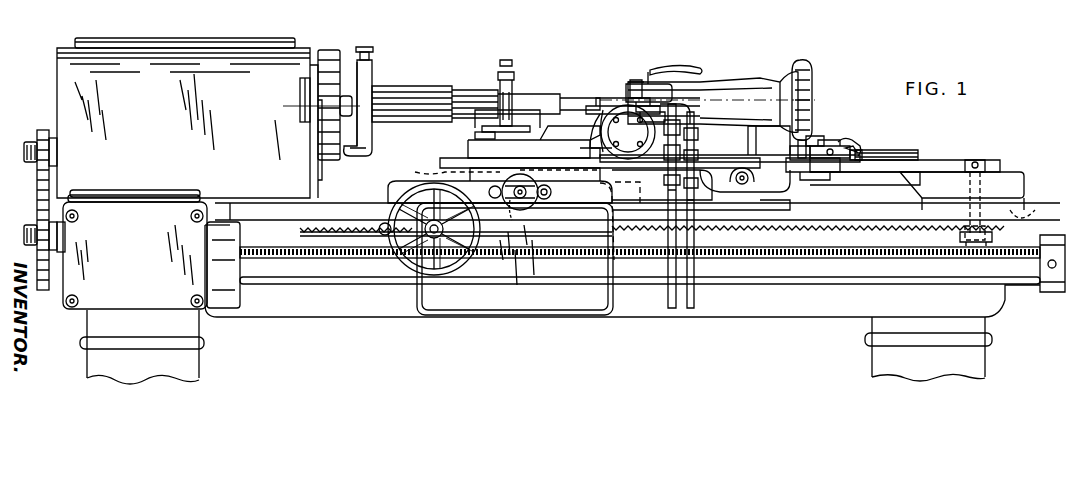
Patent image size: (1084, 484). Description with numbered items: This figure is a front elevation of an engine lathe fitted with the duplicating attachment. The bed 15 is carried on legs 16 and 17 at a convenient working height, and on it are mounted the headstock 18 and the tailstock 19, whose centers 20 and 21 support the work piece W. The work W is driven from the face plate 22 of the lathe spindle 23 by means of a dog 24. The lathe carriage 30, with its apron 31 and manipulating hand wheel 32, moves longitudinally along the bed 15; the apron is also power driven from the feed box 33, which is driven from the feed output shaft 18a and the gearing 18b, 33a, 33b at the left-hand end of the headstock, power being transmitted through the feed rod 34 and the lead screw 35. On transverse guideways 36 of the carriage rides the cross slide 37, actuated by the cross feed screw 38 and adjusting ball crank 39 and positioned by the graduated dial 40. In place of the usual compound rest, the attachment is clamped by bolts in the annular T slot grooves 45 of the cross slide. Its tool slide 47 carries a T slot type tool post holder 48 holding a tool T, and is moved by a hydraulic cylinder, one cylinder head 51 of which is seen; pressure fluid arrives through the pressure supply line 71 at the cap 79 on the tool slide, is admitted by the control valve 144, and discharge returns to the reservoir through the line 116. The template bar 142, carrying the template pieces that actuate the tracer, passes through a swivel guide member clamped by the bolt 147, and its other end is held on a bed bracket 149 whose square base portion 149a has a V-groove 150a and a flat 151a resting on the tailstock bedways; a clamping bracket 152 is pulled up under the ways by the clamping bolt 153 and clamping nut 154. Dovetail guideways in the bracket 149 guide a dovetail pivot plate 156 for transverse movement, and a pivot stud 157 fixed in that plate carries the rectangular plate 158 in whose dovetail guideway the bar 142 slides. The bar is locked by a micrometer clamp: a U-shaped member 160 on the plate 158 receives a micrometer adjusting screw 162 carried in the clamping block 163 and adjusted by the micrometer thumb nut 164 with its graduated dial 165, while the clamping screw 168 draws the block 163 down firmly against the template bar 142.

The bed 15 is at (374, 304).
The leg 16 is at (190, 370).
The leg 17 is at (880, 361).
The headstock 18 is at (60, 64).
The feed output shaft 18a is at (26, 150).
The gearing 18b is at (43, 130).
The tailstock 19 is at (748, 92).
The center 20 is at (346, 116).
The center 21 is at (608, 98).
The face plate 22 is at (330, 50).
The lathe spindle 23 is at (308, 114).
The dog 24 is at (373, 68).
The lathe carriage 30 is at (392, 184).
The apron 31 is at (545, 315).
The manipulating hand wheel 32 is at (470, 252).
The feed box 33 is at (135, 252).
The gearing 33a is at (66, 236).
The gearing 33b is at (38, 194).
The feed rod 34 is at (888, 282).
The lead screw 35 is at (950, 246).
The guideways 36 is at (553, 192).
The cross slide 37 is at (576, 175).
The cross feed screw 38 is at (520, 208).
The adjusting ball crank 39 is at (548, 200).
The graduated dial 40 is at (528, 214).
The annular T slot grooves 45 is at (583, 163).
The tool slide 47 is at (590, 128).
The T slot type tool post holder 48 is at (475, 135).
The cylinder head 51 is at (614, 138).
The pressure supply line 71 is at (694, 297).
The cap 79 is at (630, 88).
The line 116 is at (668, 297).
The template bar 142 is at (906, 150).
The control valve 144 is at (672, 96).
The bolt 147 is at (628, 222).
The bed bracket 149 is at (896, 168).
The square base portion 149a is at (1008, 172).
The rack 150a is at (905, 230).
The bracket 151a is at (1038, 206).
The clamping bracket 152 is at (992, 234).
The clamping bolt 153 is at (972, 162).
The clamping nut 154 is at (980, 162).
The dovetail pivot plate 156 is at (816, 166).
The pivot stud 157 is at (836, 166).
The rectangular plate 158 is at (776, 152).
The U-shaped member 160 is at (862, 150).
The micrometer adjusting screw 162 is at (862, 140).
The clamping block 163 is at (836, 142).
The micrometer thumb nut 164 is at (796, 96).
The graduated dial 165 is at (812, 132).
The clamping screw 168 is at (824, 138).
The cutting tool T is at (512, 110).
The work piece W is at (553, 112).